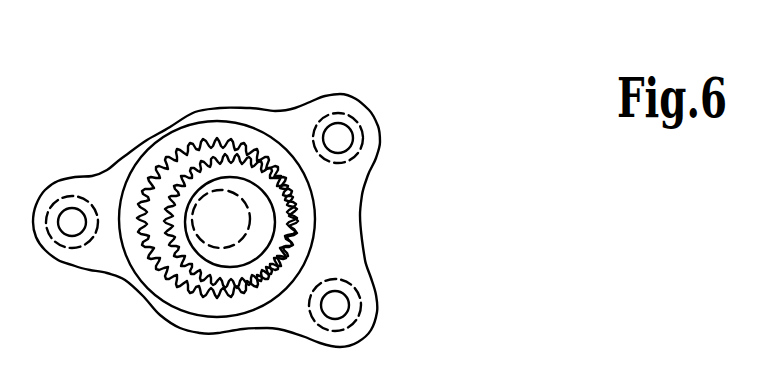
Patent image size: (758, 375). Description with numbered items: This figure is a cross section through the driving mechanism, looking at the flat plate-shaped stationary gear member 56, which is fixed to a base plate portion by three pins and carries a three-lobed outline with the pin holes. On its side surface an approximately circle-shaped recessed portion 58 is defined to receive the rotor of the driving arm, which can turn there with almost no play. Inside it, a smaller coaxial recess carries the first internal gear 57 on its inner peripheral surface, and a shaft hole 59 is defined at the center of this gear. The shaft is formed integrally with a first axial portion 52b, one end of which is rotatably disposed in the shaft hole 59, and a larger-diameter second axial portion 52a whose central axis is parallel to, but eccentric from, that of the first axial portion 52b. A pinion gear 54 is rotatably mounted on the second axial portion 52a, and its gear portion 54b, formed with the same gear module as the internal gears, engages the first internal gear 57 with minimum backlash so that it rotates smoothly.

The stationary gear member 56 is at (284, 96).
The recessed portion 58 is at (345, 203).
The first internal gear 57 is at (185, 145).
The shaft hole 59 is at (165, 198).
The pinion gear 54 is at (225, 147).
The gear portion 54b is at (203, 160).
The second axial portion 52a is at (283, 230).
The first axial portion 52b is at (245, 207).